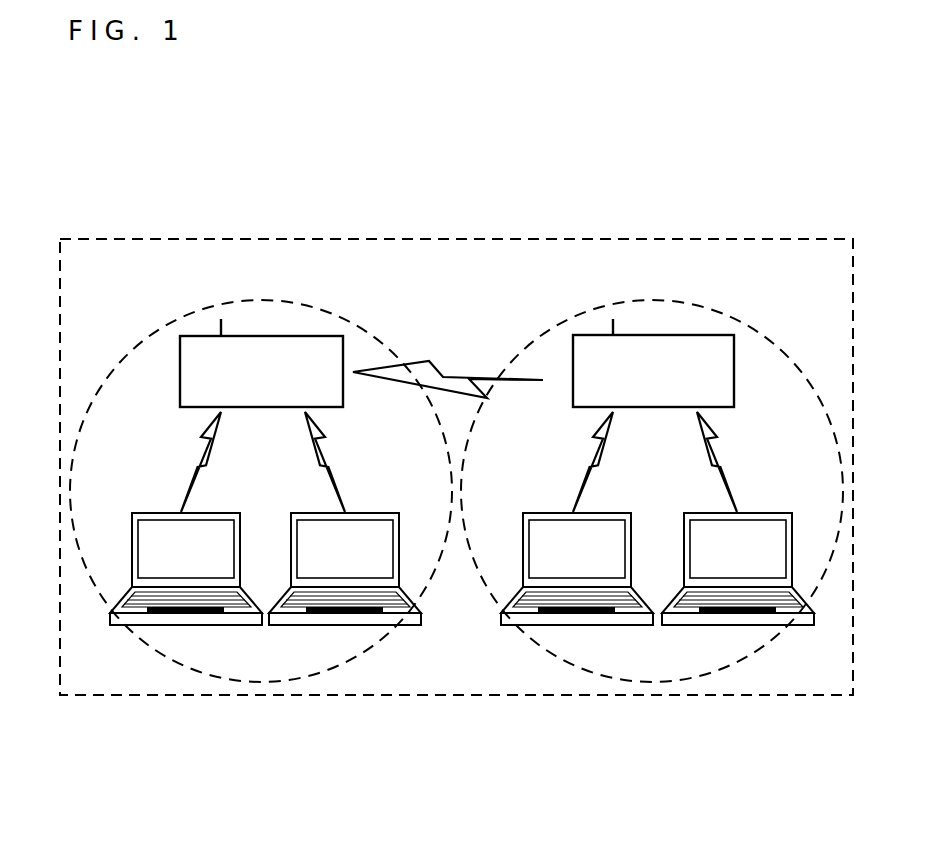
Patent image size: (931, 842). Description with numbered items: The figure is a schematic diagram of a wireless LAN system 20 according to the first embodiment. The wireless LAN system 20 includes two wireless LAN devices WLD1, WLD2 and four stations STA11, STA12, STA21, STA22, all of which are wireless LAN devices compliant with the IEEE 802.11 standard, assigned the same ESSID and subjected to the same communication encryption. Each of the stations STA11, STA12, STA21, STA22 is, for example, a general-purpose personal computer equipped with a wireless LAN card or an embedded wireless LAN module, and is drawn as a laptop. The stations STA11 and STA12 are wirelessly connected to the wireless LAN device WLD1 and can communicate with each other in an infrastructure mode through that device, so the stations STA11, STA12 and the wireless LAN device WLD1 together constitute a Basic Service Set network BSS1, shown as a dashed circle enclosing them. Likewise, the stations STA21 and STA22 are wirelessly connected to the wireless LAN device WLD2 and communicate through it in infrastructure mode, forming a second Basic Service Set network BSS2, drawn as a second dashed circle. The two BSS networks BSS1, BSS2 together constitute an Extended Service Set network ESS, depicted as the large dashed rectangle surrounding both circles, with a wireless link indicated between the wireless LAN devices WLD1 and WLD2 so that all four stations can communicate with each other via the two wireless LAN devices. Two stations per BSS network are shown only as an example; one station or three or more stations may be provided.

The wireless LAN system 20 is at (273, 125).
The ESS network ESS is at (632, 239).
The BSS network BSS1 is at (152, 337).
The BSS network BSS2 is at (786, 300).
The wireless LAN device WLD1 is at (261, 363).
The wireless LAN device WLD2 is at (653, 363).
The station STA11 is at (177, 625).
The station STA12 is at (346, 625).
The station STA21 is at (578, 625).
The station STA22 is at (748, 625).